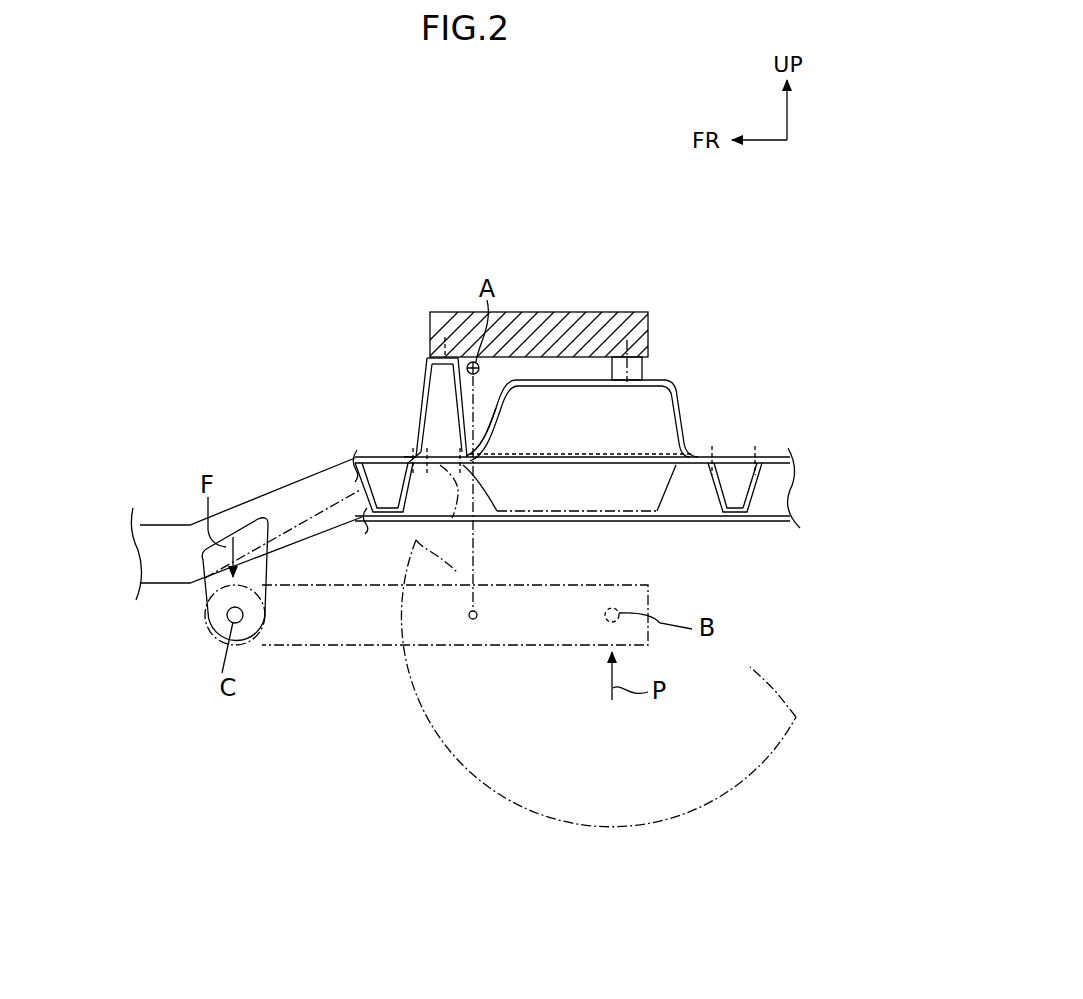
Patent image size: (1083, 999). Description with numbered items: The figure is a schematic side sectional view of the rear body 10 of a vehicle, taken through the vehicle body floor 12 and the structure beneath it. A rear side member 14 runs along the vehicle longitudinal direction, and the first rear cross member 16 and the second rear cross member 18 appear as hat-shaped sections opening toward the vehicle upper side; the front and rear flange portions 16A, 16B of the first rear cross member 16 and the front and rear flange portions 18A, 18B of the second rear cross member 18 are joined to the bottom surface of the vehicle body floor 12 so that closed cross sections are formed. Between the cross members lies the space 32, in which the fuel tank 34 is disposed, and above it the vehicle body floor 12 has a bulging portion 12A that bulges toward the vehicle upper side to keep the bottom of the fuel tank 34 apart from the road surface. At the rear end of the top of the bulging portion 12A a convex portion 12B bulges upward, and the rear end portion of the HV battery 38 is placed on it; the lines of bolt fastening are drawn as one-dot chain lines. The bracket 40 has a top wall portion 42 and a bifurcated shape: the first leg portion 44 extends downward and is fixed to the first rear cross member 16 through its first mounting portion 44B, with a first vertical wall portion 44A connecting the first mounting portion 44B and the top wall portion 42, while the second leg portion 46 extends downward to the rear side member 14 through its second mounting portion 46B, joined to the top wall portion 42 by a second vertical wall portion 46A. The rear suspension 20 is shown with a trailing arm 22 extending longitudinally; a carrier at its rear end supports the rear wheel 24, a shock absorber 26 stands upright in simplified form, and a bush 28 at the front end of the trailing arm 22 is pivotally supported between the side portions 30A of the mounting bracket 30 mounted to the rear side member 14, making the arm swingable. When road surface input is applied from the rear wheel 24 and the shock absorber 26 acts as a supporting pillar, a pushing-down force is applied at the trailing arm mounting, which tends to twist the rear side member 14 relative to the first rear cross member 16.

The rear body 10 is at (283, 278).
The vehicle body floor 12 is at (779, 452).
The bulging portion 12A is at (672, 373).
The convex portions 12B is at (649, 345).
The rear side member 14 is at (764, 524).
The first rear cross member 16 is at (358, 499).
The front flange portion 16A is at (361, 471).
The rear flange portion 16B is at (425, 467).
The second rear cross member 18 is at (717, 508).
The front flange portion 18A is at (711, 463).
The rear flange portion 18B is at (753, 465).
The rear suspension 20 is at (358, 672).
The trailing arm 22 is at (528, 647).
The rear wheel 24 is at (452, 748).
The shock absorber 26 is at (477, 543).
The bush 28 is at (205, 629).
The mounting bracket 30 is at (206, 586).
The side portions 30A is at (260, 565).
The space 32 is at (546, 497).
The fuel tank 34 is at (617, 513).
The HV battery 38 is at (563, 312).
The bracket 40 is at (400, 370).
The top wall portion 42 is at (434, 351).
The first leg portion 44 is at (411, 394).
The first vertical wall portion 44A is at (418, 419).
The first mounting portion 44B is at (413, 456).
The second leg portion 46 is at (458, 399).
The second vertical wall portion 46A is at (452, 432).
The second mounting portion 46B is at (443, 509).